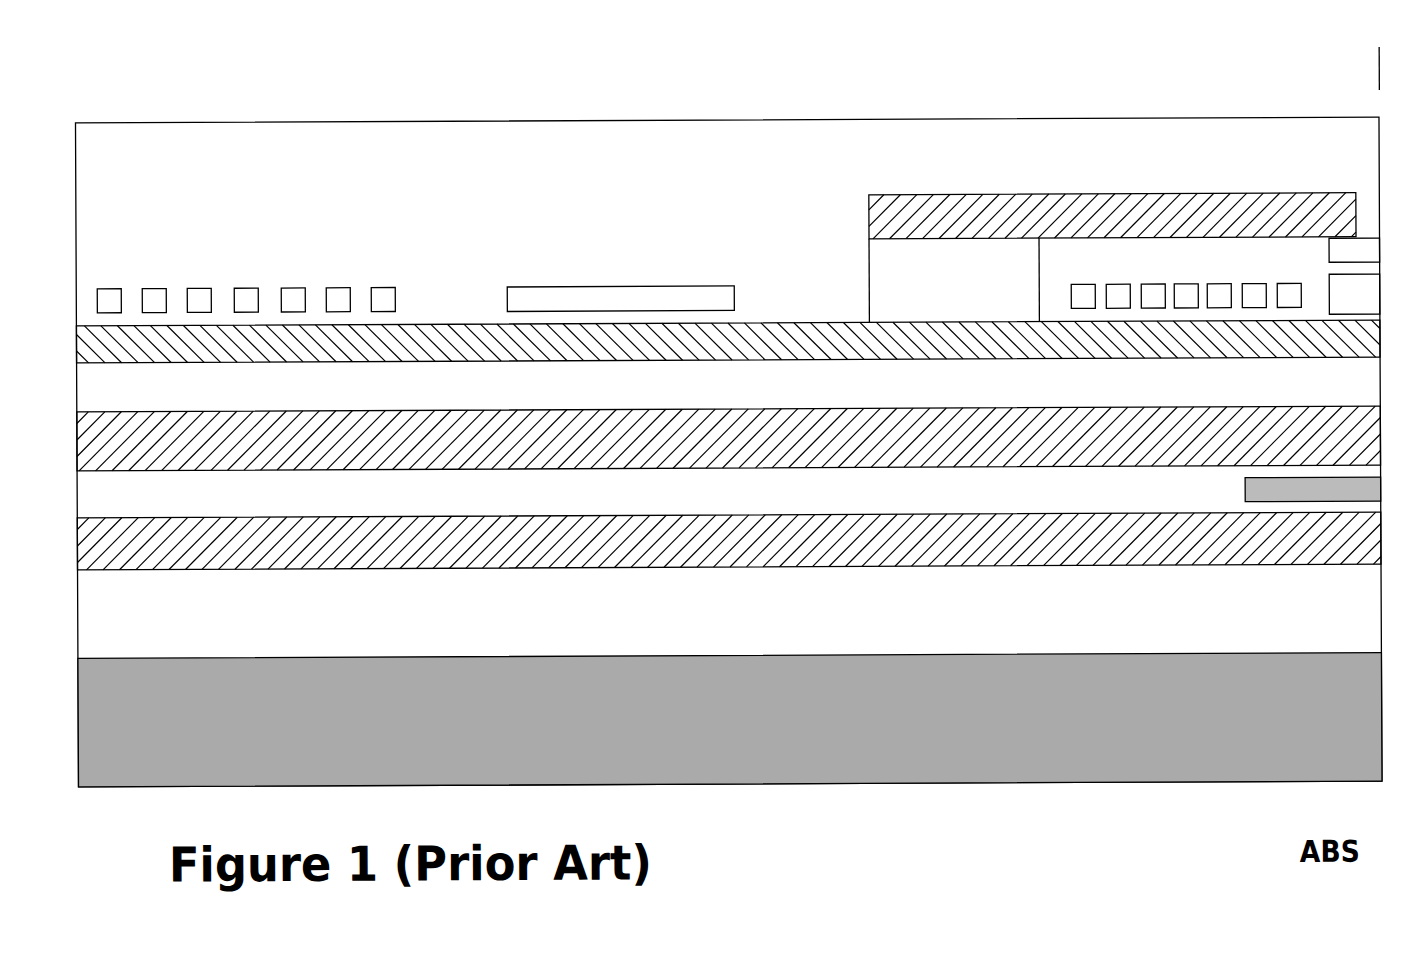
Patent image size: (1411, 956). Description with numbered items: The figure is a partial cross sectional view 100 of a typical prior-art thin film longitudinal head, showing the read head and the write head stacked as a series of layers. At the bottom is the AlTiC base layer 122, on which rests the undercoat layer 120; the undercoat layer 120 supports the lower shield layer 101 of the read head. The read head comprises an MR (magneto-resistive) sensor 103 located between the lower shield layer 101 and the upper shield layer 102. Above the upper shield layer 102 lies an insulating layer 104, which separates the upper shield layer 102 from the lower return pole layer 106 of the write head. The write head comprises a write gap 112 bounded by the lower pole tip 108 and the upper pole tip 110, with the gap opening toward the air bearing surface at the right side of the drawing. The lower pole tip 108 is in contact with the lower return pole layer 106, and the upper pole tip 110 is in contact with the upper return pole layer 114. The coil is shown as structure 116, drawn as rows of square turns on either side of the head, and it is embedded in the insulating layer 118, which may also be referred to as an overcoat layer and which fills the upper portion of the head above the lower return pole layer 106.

The partial cross sectional view 100 is at (472, 87).
The lower shield layer 101 is at (812, 549).
The upper shield layer 102 is at (757, 452).
The MR sensor 103 is at (1245, 492).
The insulating layer 104 is at (808, 402).
The lower return pole layer 106 is at (682, 357).
The lower pole tip 108 is at (1345, 303).
The upper pole tip 110 is at (1330, 251).
The write gap 112 is at (1377, 271).
The upper return pole layer 114 is at (1200, 220).
The coil 116 is at (307, 298).
The insulating layer 118 is at (698, 219).
The undercoat layer 120 is at (982, 629).
The AlTiC base layer 122 is at (843, 741).